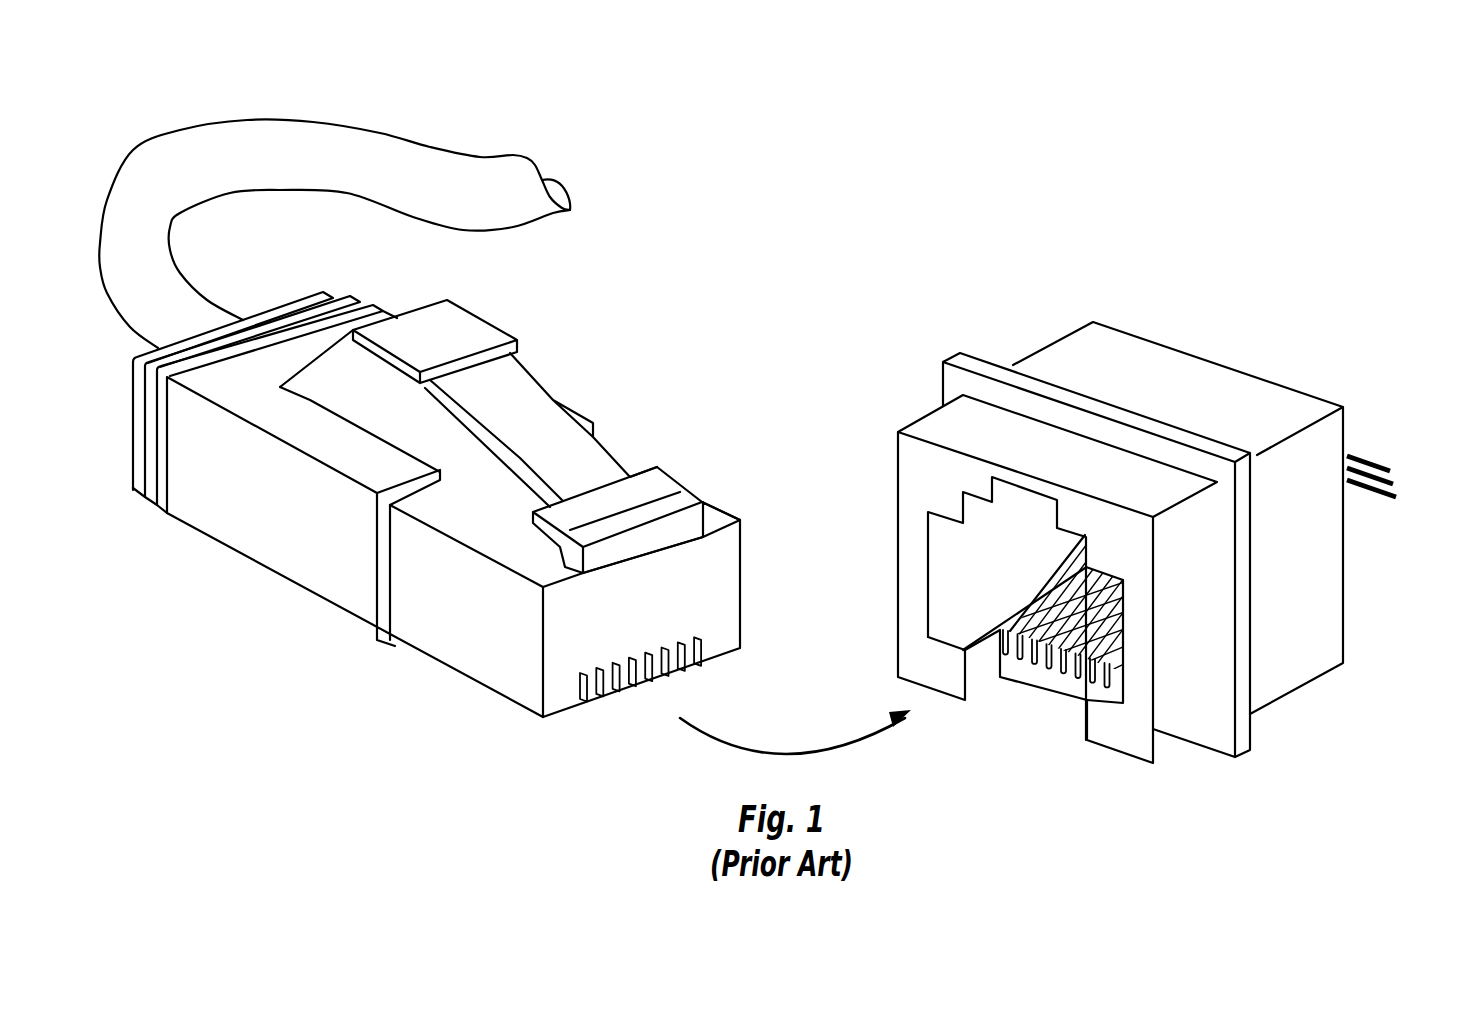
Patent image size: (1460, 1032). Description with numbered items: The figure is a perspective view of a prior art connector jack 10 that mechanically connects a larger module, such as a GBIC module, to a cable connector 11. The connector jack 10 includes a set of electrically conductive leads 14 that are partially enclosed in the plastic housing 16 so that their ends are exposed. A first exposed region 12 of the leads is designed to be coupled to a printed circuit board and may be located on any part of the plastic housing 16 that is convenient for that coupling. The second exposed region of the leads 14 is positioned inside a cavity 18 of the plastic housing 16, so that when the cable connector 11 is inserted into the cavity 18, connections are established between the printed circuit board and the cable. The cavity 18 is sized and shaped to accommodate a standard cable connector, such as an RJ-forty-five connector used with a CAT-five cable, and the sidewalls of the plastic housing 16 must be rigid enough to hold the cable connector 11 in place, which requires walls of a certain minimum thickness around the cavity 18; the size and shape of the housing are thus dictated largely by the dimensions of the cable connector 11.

The connector jack 10 is at (1121, 498).
The cable connector 11 is at (612, 352).
The first exposed region 12 is at (1368, 456).
The electrically conductive leads 14 is at (1072, 680).
The plastic housing 16 is at (1065, 355).
The cavity 18 is at (955, 600).